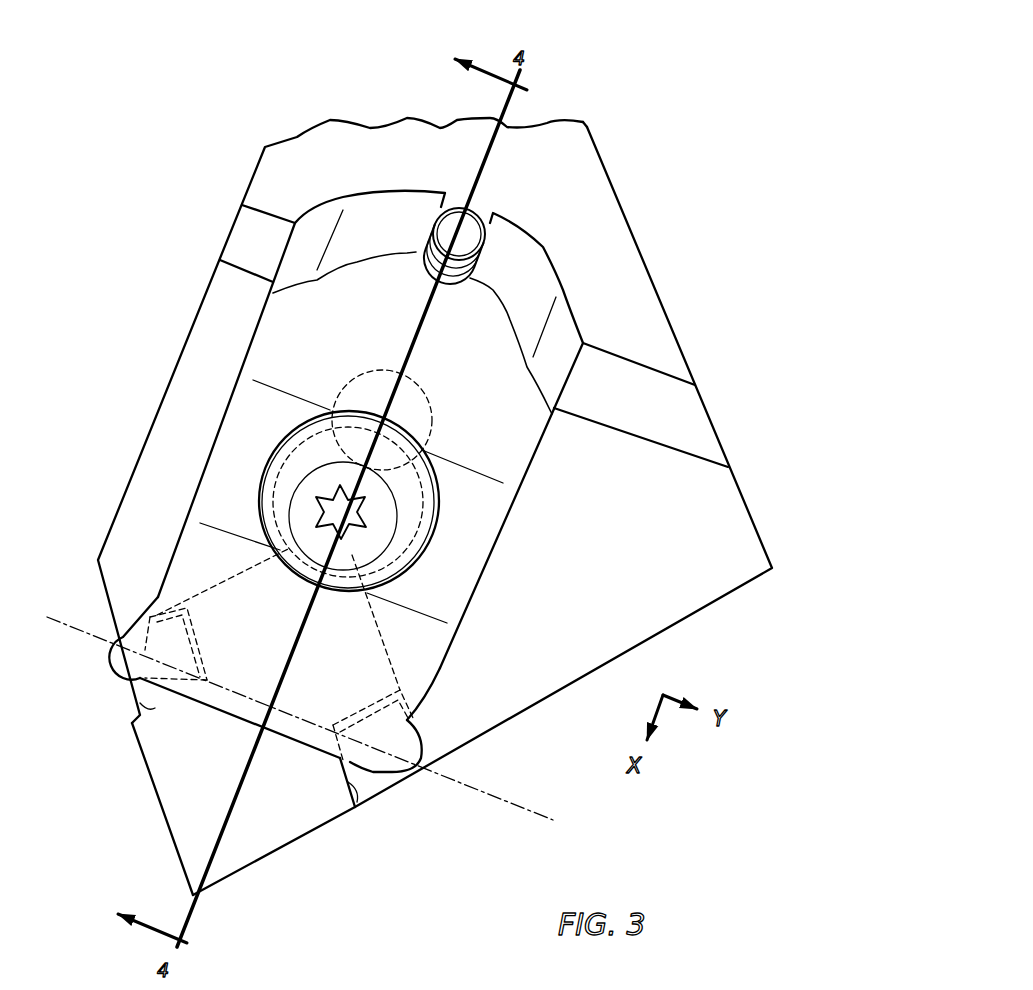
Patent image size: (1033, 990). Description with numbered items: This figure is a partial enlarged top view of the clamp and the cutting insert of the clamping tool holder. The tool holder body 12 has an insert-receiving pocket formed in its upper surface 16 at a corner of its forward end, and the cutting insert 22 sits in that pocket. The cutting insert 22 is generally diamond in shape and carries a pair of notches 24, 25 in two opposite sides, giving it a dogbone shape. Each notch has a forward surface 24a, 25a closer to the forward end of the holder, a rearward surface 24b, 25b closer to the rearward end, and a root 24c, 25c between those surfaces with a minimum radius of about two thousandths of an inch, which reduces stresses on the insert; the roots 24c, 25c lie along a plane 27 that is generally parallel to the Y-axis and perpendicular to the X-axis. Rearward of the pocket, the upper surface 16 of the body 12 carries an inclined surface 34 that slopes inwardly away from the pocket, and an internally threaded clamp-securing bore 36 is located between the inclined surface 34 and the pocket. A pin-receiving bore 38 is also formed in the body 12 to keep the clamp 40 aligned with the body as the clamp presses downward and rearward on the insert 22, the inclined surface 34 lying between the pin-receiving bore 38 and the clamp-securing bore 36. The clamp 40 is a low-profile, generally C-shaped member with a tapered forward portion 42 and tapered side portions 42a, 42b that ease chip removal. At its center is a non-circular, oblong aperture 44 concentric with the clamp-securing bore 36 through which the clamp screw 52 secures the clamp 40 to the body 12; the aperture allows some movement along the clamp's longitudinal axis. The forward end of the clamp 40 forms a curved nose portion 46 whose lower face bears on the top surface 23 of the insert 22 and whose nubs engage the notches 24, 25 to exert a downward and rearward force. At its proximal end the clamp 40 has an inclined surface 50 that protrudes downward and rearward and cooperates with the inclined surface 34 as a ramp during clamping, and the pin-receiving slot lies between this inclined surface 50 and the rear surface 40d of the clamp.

The tool holder body 12 is at (593, 203).
The upper surface 16 is at (642, 557).
The cutting insert 22 is at (148, 820).
The top surface 23 is at (278, 809).
The notch 24 is at (382, 779).
The forward surface 24a is at (354, 789).
The rearward surface 24b is at (423, 750).
The root 24c is at (347, 760).
The notch 25 is at (143, 695).
The forward surface 25a is at (155, 707).
The rearward surface 25b is at (157, 617).
The root 25c is at (140, 677).
The plane 27 is at (513, 803).
The inclined surface 34 is at (687, 447).
The clamp-securing bore 36 is at (433, 407).
The pin-receiving bore 38 is at (470, 222).
The clamp 40 is at (195, 399).
The rear surface 40d is at (392, 217).
The tapered forward portion 42 is at (185, 572).
The tapered side portion 42a is at (443, 677).
The tapered side portion 42b is at (157, 590).
The non-circular aperture 44 is at (440, 510).
The curved nose portion 46 is at (243, 709).
The inclined surface 50 is at (657, 368).
The clamp screw 52 is at (248, 483).